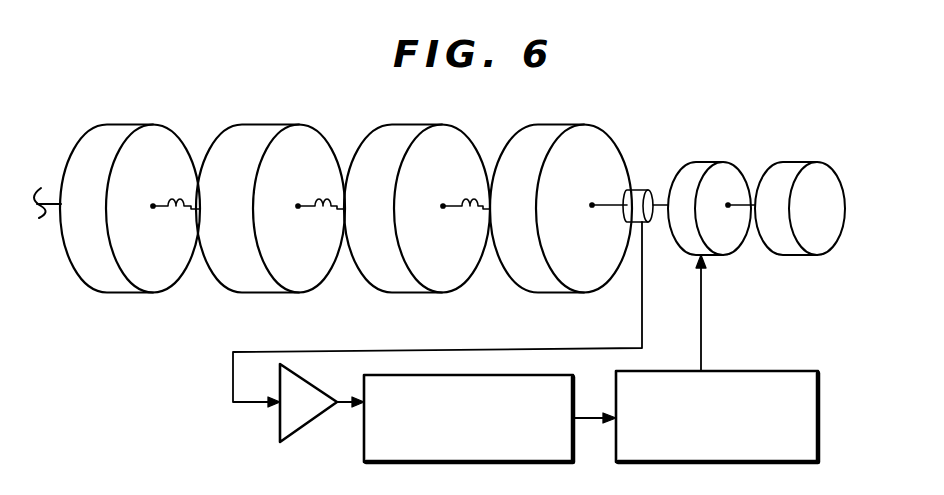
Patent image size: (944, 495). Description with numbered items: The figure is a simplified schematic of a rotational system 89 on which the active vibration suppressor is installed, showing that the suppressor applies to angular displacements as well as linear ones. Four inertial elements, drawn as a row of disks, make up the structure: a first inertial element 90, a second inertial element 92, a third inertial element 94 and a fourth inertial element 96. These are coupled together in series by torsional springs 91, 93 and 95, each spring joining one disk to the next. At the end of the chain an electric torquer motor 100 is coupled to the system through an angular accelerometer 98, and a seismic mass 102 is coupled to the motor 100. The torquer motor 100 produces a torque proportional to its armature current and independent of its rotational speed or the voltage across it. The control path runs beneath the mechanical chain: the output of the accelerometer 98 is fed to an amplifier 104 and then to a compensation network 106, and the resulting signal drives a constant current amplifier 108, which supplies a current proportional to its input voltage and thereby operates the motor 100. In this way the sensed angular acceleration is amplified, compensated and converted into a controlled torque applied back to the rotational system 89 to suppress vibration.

The rotational system 89 is at (307, 100).
The inertial element I1 90 is at (118, 283).
The torsional spring 91 is at (176, 195).
The inertial element I2 92 is at (260, 282).
The torsional spring 93 is at (325, 198).
The inertial element I3 94 is at (403, 281).
The torsional spring 95 is at (467, 198).
The inertial element I4 96 is at (553, 281).
The angular accelerometer 98 is at (638, 198).
The electric torquer motor 100 is at (700, 172).
The seismic mass 102 is at (792, 171).
The amplifier 104 is at (292, 428).
The compensation network 106 is at (373, 448).
The constant current amplifier 108 is at (807, 440).